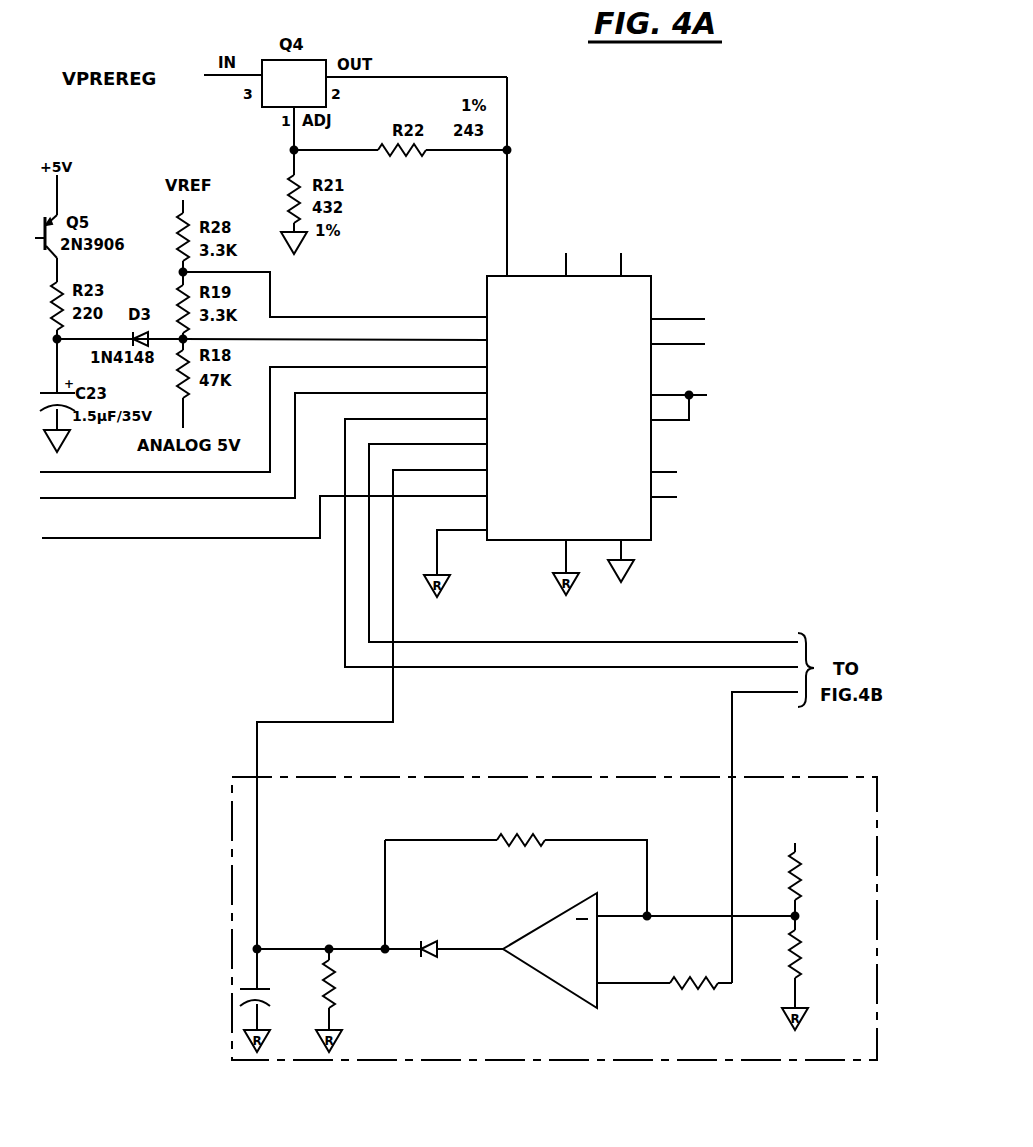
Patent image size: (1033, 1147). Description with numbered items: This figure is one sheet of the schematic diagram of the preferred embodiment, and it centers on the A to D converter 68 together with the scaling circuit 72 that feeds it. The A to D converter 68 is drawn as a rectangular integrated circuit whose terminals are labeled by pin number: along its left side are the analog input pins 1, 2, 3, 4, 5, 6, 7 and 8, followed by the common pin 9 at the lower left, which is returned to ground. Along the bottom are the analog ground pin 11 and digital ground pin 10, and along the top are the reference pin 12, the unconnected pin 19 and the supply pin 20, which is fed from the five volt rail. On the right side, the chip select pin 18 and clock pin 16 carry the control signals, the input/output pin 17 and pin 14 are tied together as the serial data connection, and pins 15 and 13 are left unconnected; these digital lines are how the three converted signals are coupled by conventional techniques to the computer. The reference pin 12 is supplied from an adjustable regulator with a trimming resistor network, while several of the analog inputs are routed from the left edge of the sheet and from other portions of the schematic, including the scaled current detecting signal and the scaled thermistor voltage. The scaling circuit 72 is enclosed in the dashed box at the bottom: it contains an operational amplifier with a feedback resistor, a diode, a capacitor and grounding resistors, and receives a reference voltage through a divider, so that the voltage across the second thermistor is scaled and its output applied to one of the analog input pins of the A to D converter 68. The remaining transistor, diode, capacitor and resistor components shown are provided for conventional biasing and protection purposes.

The A to D converter 68 is at (632, 320).
The scaling circuit 72 is at (588, 777).
The A/D pin 1 IN1 1 is at (335, 294).
The A/D pin 2 IN2 2 is at (335, 331).
The A/D pin 3 IN3 3 is at (263, 409).
The A/D pin 4 IN4 4 is at (263, 435).
The A/D pin 5 IN5 5 is at (571, 533).
The A/D pin 6 IN6 6 is at (583, 533).
The A/D pin 7 IN7 7 is at (372, 699).
The A/D pin 8 IN8 8 is at (264, 507).
The A/D pin 9 COM 9 is at (455, 553).
The A/D pin 10 DGND 10 is at (628, 561).
The A/D pin 11 AGND 11 is at (565, 567).
The pin 12 is at (588, 530).
The pin 13 is at (698, 699).
The pin 14 is at (563, 672).
The A/D pin 15 is at (664, 461).
The A/D pin 16 CLK 16 is at (678, 334).
The A/D pin 17 I/O 17 is at (679, 386).
The A/D pin 18 CS 18 is at (678, 308).
The A/D pin 19 V+ 19 is at (578, 264).
The A/D pin 20 VCC 20 is at (633, 264).